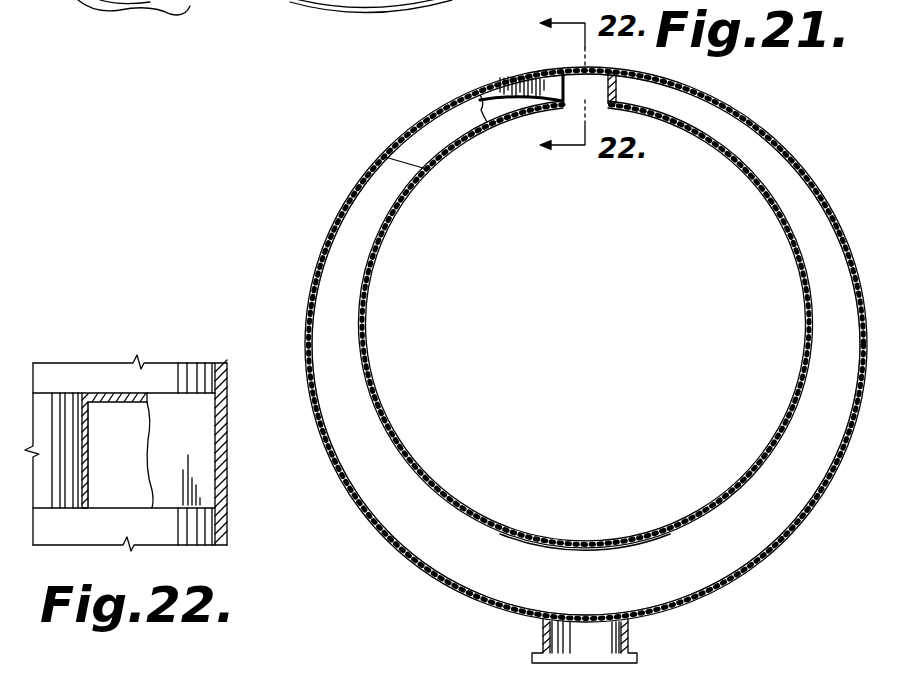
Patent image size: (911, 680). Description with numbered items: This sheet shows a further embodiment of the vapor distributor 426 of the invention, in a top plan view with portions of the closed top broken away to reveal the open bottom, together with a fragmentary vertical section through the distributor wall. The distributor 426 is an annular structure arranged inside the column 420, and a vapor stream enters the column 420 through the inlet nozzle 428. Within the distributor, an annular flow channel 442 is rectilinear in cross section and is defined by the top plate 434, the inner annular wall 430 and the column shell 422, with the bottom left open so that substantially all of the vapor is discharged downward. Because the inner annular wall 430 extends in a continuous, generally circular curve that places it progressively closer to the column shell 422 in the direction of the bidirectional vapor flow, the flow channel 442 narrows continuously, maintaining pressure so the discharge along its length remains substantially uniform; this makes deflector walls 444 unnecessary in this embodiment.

In FIG. 21, the column 420 is at (772, 112).
In FIG. 21, the column shell 422 is at (306, 290).
In FIG. 22, the column shell 422 is at (228, 492).
In FIG. 21, the vapor distributor 426 is at (590, 536).
In FIG. 21, the inlet nozzle 428 is at (629, 646).
In FIG. 21, the inner annular wall 430 is at (368, 320).
In FIG. 22, the inner annular wall 430 is at (80, 497).
In FIG. 21, the top plate 434 is at (430, 170).
In FIG. 21, the flow channel 442 is at (684, 584).
In FIG. 22, the flow channel 442 is at (137, 486).
In FIG. 21, the deflector walls 444 is at (565, 88).
In FIG. 22, the deflector walls 444 is at (196, 448).